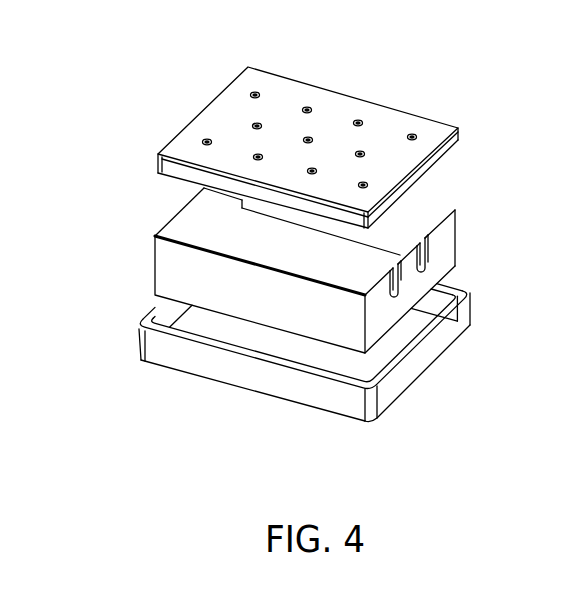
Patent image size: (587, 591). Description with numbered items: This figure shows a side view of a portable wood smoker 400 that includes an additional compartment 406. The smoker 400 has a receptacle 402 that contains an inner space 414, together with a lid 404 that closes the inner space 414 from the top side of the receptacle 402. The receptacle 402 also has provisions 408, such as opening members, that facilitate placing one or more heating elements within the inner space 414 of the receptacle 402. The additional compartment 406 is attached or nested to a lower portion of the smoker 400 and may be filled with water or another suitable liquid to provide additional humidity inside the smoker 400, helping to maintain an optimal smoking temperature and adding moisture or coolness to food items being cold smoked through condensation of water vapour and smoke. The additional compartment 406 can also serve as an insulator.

The portable wood smoker 400 is at (114, 440).
The receptacle 402 is at (166, 268).
The lid 404 is at (216, 113).
The additional compartment 406 is at (242, 380).
The provisions 408 is at (431, 240).
The inner space 414 is at (215, 239).